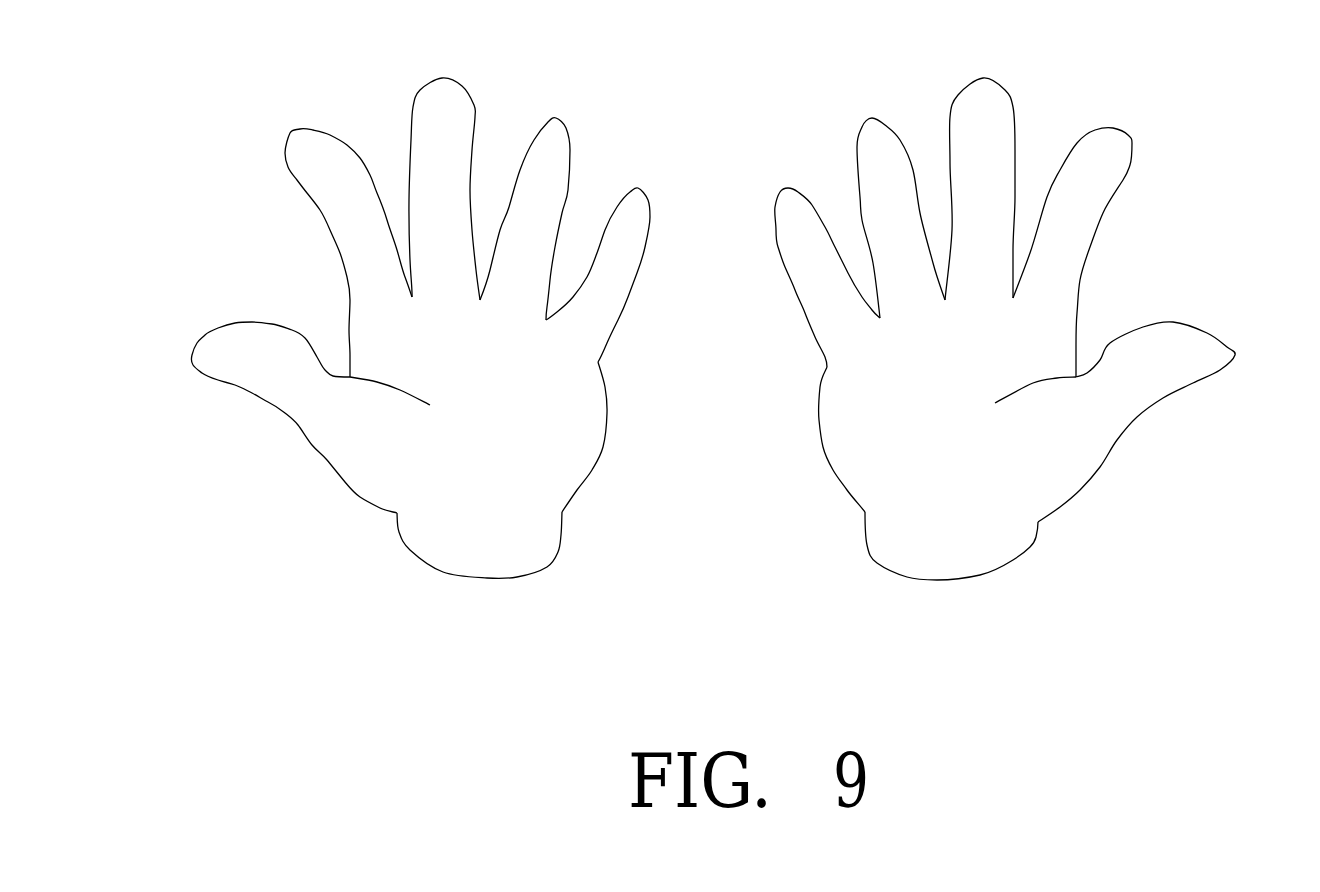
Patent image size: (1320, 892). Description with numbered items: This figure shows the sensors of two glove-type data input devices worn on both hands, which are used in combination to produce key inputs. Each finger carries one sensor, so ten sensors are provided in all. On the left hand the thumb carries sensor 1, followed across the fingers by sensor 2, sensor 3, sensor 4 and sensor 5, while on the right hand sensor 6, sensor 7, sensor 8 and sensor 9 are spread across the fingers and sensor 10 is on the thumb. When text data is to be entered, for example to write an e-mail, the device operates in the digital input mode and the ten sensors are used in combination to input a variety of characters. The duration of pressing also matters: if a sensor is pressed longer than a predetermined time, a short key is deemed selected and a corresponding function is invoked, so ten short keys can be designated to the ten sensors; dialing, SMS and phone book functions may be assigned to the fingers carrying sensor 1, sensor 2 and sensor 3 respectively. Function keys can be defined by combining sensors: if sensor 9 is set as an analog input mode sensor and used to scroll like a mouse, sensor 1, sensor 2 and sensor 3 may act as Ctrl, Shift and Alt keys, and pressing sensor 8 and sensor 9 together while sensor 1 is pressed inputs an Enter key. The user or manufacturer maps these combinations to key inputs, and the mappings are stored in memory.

The sensor # 1 is at (297, 417).
The sensor # 2 is at (340, 233).
The sensor # 3 is at (444, 168).
The sensor # 4 is at (525, 196).
The sensor # 5 is at (598, 252).
The sensor # 6 is at (827, 256).
The sensor # 7 is at (901, 194).
The sensor # 8 is at (980, 168).
The sensor # 9 is at (1080, 234).
The sensor # 10 is at (1133, 422).